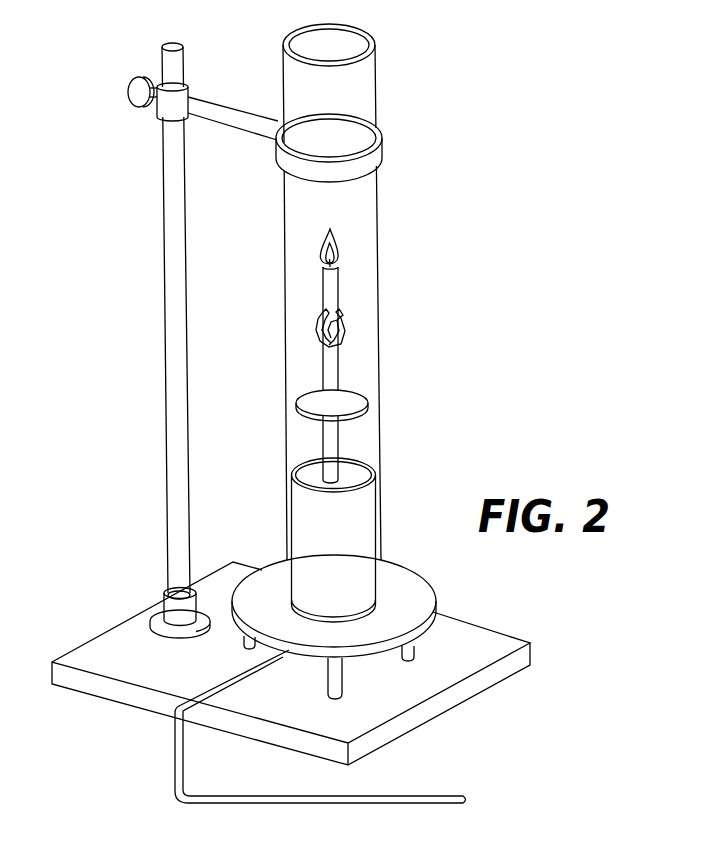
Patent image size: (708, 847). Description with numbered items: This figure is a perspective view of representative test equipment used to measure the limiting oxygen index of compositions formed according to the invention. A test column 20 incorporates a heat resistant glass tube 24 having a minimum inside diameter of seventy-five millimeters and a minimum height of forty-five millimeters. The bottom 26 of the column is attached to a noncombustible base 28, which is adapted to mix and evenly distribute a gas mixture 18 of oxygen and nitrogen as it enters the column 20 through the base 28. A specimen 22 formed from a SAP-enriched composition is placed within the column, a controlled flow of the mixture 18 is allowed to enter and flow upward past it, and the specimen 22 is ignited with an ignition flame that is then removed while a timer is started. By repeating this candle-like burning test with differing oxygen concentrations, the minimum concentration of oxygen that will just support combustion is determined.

The mixture 18 is at (540, 798).
The test column 20 is at (365, 357).
The specimen 22 is at (332, 280).
The heat resistant glass tube 24 is at (373, 442).
The bottom 26 is at (380, 606).
The noncombustible base 28 is at (275, 578).